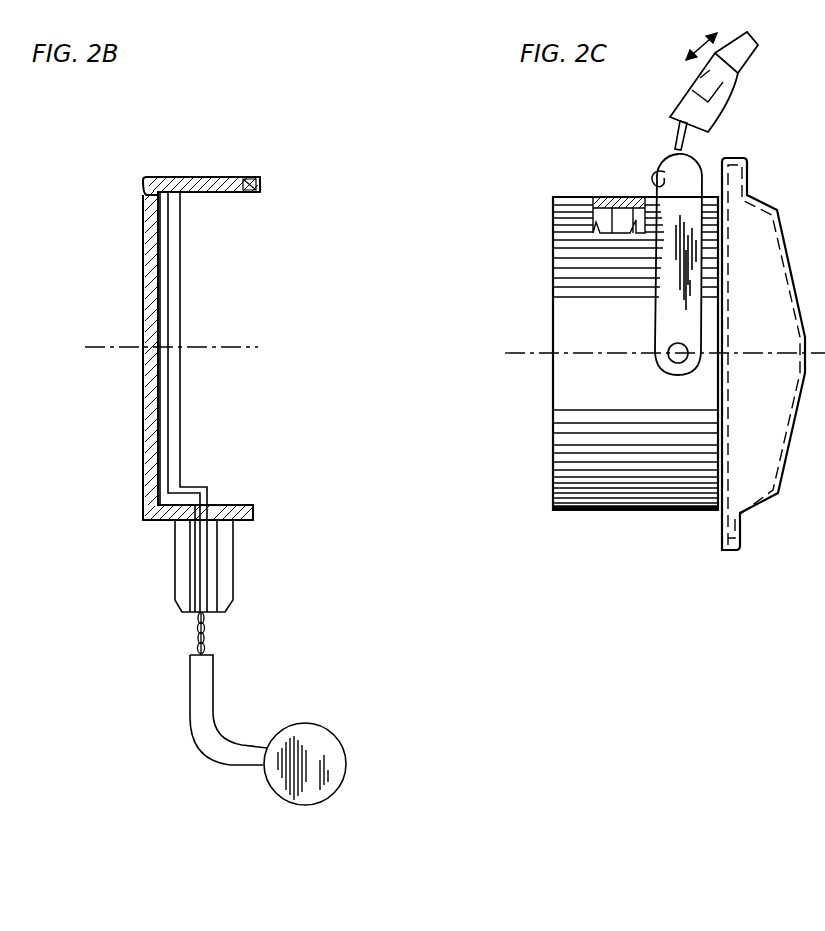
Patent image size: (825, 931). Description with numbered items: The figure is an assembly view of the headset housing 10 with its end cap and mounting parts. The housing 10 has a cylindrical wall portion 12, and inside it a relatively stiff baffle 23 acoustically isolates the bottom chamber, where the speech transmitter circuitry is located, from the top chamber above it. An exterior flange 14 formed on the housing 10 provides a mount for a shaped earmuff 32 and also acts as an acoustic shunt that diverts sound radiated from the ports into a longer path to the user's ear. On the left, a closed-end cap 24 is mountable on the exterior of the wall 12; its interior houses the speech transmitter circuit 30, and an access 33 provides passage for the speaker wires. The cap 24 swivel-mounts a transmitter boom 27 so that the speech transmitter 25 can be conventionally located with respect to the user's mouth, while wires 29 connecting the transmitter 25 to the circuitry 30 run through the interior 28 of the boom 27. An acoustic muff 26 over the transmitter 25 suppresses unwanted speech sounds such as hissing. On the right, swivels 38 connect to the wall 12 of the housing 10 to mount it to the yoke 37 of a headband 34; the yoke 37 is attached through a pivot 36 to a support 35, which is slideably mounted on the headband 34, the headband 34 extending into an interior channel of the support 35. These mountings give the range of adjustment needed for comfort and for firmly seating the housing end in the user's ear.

In FIG. 2C, the housing 10 is at (650, 512).
In FIG. 2C, the cylindrical wall portion 12 is at (597, 512).
In FIG. 2C, the exterior flange 14 is at (757, 160).
In FIG. 2C, the baffle 23 is at (613, 200).
In FIG. 2B, the closed-end cap 24 is at (143, 513).
In FIG. 2B, the speech transmitter 25 is at (345, 748).
In FIG. 2B, the acoustic muff 26 is at (343, 782).
In FIG. 2B, the transmitter boom 27 is at (215, 680).
In FIG. 2B, the interior of boom 28 is at (190, 588).
In FIG. 2B, the wires 29 is at (205, 628).
In FIG. 2B, the speech transmitter circuit 30 is at (187, 258).
In FIG. 2C, the shaped earmuff 32 is at (778, 489).
In FIG. 2B, the access 33 is at (250, 176).
In FIG. 2C, the headband 34 is at (757, 55).
In FIG. 2C, the support 35 is at (730, 98).
In FIG. 2C, the pivot 36 is at (675, 138).
In FIG. 2C, the yoke 37 is at (662, 298).
In FIG. 2C, the swivels 38 is at (673, 367).